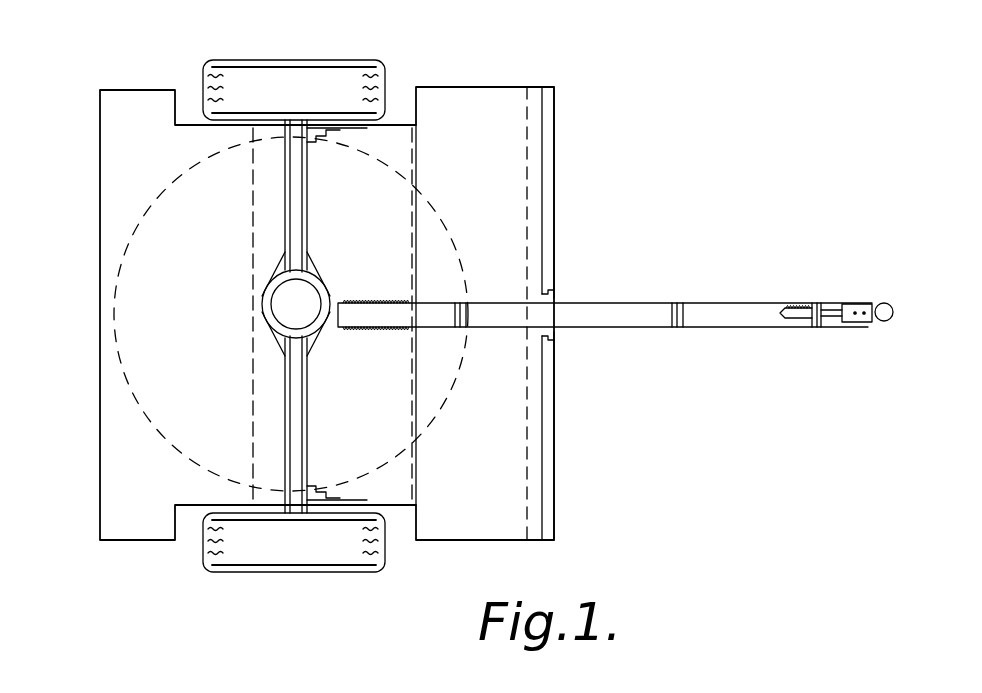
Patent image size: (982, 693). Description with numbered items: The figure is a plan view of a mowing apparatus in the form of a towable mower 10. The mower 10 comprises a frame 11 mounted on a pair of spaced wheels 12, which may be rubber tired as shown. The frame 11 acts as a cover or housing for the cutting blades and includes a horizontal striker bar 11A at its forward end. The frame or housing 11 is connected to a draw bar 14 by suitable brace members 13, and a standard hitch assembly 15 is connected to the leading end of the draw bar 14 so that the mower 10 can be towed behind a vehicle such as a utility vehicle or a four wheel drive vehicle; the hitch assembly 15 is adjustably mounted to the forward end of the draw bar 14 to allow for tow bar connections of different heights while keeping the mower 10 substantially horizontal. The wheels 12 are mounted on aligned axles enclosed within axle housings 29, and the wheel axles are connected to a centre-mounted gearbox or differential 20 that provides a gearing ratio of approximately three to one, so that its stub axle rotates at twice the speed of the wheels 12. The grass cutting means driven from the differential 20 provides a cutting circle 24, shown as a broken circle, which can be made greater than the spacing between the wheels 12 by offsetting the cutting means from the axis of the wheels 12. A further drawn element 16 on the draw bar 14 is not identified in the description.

The towable mower 10 is at (578, 224).
The frame 11 is at (120, 152).
The horizontal striker bar 11A is at (546, 474).
The wheels 12 is at (298, 80).
The brace members 13 is at (537, 329).
The draw bar 14 is at (620, 318).
The hitch assembly 15 is at (882, 322).
The locking clip 16 is at (803, 300).
The gearbox or differential 20 is at (280, 303).
The cutting circle 24 is at (170, 455).
The axle housings 29 is at (285, 445).